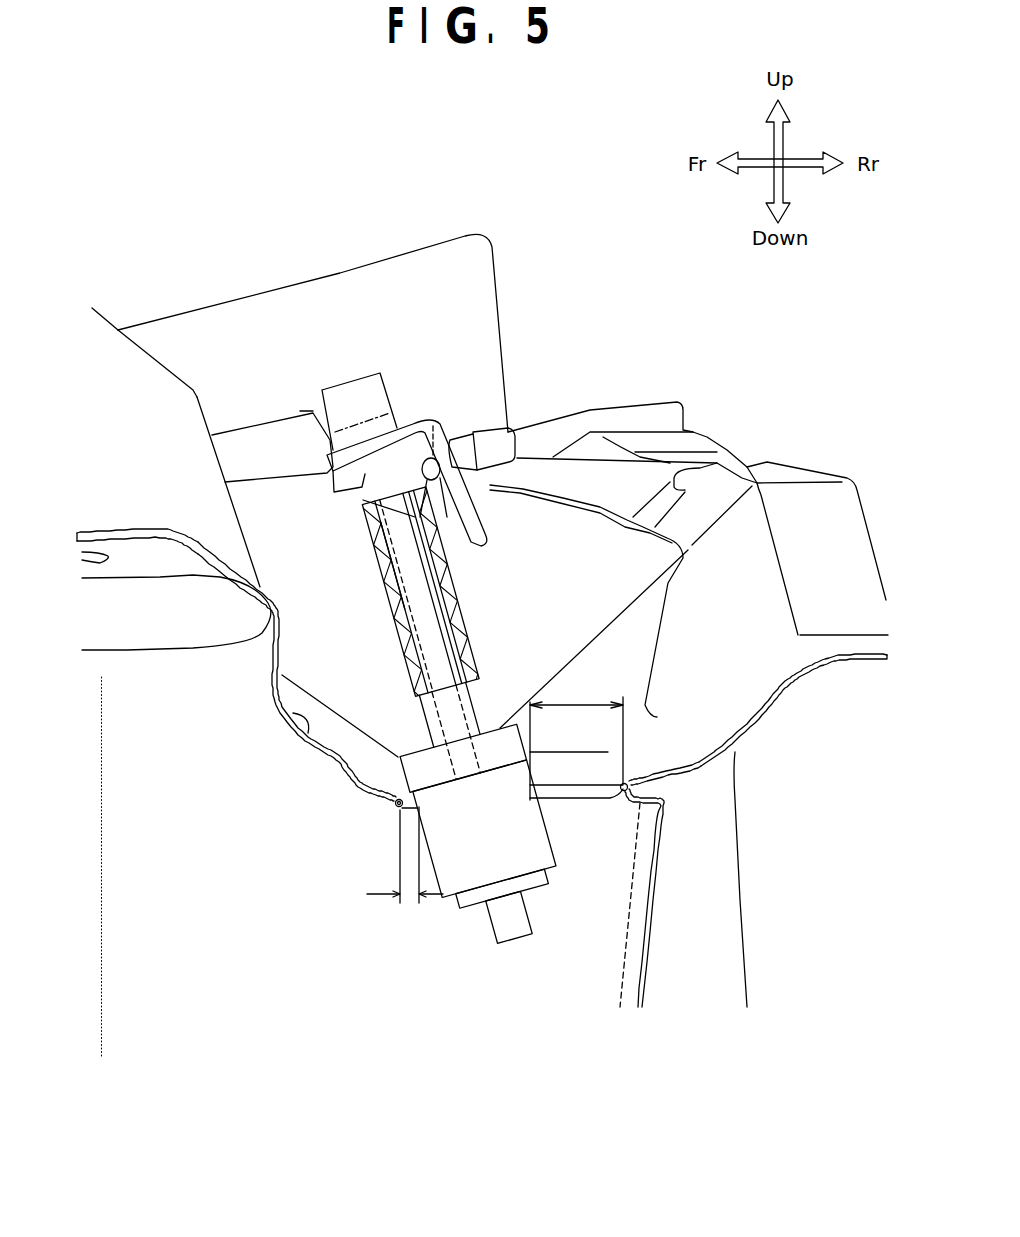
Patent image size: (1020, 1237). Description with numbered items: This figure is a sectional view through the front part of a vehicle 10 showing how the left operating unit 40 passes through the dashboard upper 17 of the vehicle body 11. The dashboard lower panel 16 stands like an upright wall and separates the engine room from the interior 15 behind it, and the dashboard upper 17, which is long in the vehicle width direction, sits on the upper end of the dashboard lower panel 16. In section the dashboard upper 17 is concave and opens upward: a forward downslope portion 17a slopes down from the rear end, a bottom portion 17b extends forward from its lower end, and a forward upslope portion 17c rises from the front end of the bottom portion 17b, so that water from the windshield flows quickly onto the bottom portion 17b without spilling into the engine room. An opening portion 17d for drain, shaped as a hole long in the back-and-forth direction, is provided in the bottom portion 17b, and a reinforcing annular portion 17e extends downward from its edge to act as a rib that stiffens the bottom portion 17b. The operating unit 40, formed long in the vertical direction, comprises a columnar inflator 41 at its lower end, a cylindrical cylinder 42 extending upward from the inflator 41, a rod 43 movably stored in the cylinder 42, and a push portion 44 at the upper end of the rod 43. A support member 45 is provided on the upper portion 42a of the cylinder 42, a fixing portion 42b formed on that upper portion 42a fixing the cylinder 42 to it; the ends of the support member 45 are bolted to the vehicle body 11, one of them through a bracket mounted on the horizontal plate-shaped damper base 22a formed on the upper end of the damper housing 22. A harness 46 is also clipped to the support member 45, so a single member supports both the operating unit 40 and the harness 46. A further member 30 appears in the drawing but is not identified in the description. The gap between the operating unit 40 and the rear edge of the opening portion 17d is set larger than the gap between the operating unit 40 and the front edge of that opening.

The vehicle 10 is at (167, 178).
The vehicle body 11 is at (110, 527).
The interior 15 is at (828, 803).
The dashboard lower panel 16 is at (742, 915).
The dashboard upper 17 is at (767, 462).
The forward downslope portion 17a is at (773, 697).
The bottom portion 17b is at (675, 768).
The forward upslope portion 17c is at (285, 718).
The opening portion 17d is at (610, 800).
The reinforcing annular portion 17e is at (393, 807).
The damper housing 22 is at (138, 700).
The damper base 22a is at (152, 527).
The bracket 30 is at (353, 374).
The operating unit 40 is at (462, 907).
The inflator 41 is at (500, 885).
The cylinder 42 is at (388, 623).
The upper portion 42a is at (313, 480).
The fixing portion 42b is at (332, 453).
The rod 43 is at (375, 555).
The push portion 44 is at (368, 370).
The support member 45 is at (427, 407).
The harness 46 is at (487, 423).